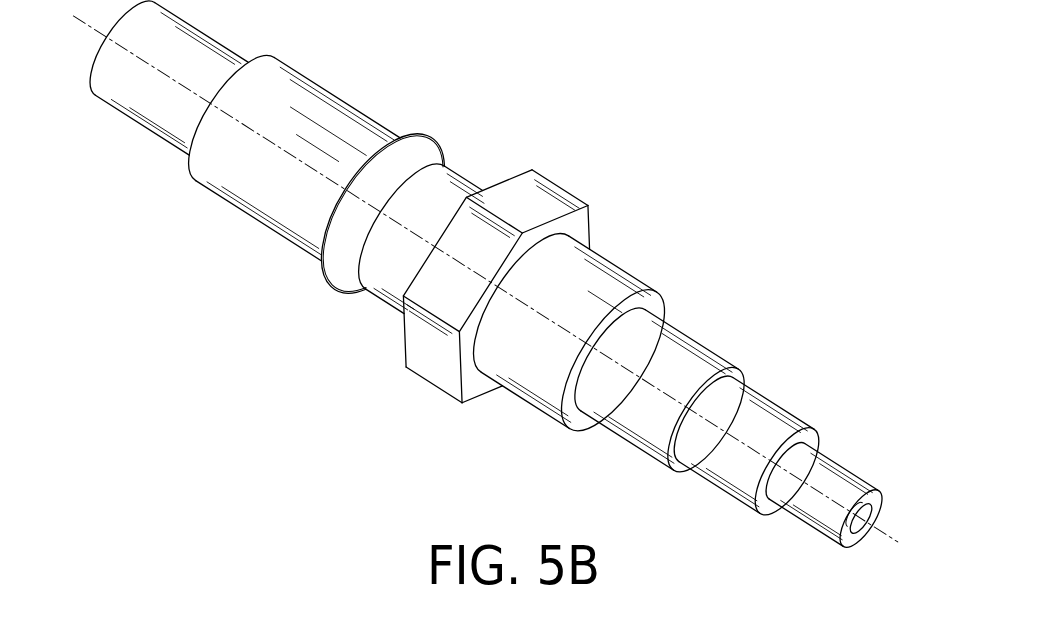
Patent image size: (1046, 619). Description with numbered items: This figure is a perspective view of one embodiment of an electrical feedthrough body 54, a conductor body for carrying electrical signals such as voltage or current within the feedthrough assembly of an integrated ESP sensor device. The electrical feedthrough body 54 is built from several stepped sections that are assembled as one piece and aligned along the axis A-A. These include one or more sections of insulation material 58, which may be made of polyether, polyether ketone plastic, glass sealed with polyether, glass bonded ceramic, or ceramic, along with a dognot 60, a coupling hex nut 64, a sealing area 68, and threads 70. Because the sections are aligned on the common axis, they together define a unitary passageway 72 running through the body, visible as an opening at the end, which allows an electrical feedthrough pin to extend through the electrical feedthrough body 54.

The electrical feedthrough body 54 is at (733, 99).
The insulation material 58 is at (195, 48).
The dognot 60 is at (428, 140).
The coupling hex nut 64 is at (551, 192).
The sealing area 68 is at (595, 268).
The threads 70 is at (688, 347).
The unitary passageway 72 is at (862, 502).